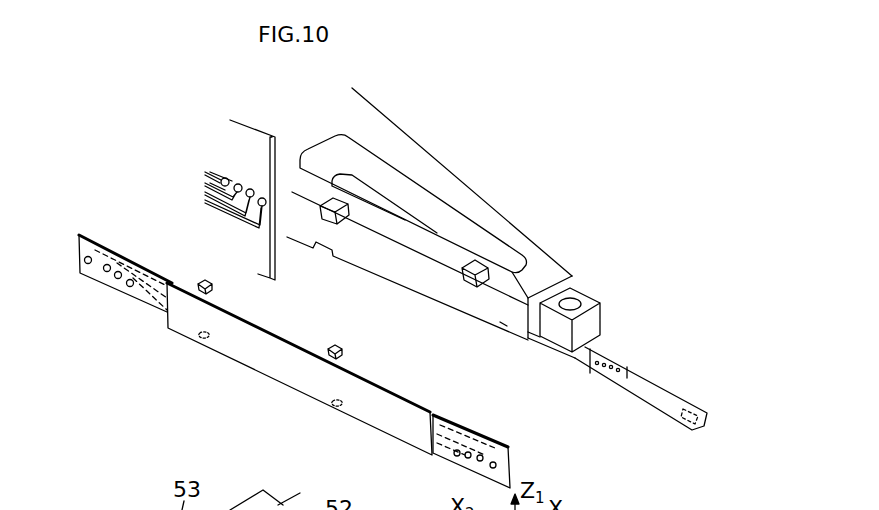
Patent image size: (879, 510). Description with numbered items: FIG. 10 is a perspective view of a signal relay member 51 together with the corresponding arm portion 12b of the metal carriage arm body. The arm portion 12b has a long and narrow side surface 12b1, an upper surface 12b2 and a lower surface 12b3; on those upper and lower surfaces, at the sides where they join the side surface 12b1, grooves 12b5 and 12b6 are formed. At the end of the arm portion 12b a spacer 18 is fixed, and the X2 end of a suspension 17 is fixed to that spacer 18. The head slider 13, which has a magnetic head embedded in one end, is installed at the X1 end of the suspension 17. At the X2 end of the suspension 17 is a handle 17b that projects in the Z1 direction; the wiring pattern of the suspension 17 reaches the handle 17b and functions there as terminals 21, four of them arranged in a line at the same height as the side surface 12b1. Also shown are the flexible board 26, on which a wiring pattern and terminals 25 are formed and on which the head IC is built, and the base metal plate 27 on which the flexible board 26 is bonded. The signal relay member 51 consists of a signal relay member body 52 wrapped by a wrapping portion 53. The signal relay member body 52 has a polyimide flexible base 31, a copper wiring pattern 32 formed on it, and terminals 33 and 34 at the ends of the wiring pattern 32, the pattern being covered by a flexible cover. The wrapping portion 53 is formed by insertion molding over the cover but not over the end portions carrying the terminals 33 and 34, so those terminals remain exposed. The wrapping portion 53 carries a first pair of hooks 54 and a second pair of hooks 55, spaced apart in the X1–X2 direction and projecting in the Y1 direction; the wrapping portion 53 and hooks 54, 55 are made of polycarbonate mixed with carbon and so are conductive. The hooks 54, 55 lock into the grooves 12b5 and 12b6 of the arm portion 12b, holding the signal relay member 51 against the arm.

The arm portion 12b is at (474, 206).
The side surface 12b1 is at (402, 273).
The upper surface 12b2 is at (398, 230).
The lower surface 12b3 is at (502, 327).
The groove 12b5 is at (464, 285).
The groove 12b6 is at (320, 220).
The head slider 13 is at (699, 406).
The suspension 17 is at (660, 382).
The handle 17b is at (617, 362).
The spacer 18 is at (573, 358).
The terminals 21 is at (602, 370).
The terminals 25 is at (240, 180).
The flexible board 26 is at (246, 164).
The base metal plate 27 is at (272, 134).
The flexible base 31 is at (512, 447).
The wiring pattern 32 is at (128, 298).
The terminals 33 is at (460, 470).
The terminals 34 is at (78, 271).
The signal relay member 51 is at (222, 362).
The signal relay member body 52 is at (488, 429).
The wrapping portion 53 is at (280, 372).
The first pair of hooks 54 is at (263, 257).
The second pair of hooks 55 is at (338, 348).